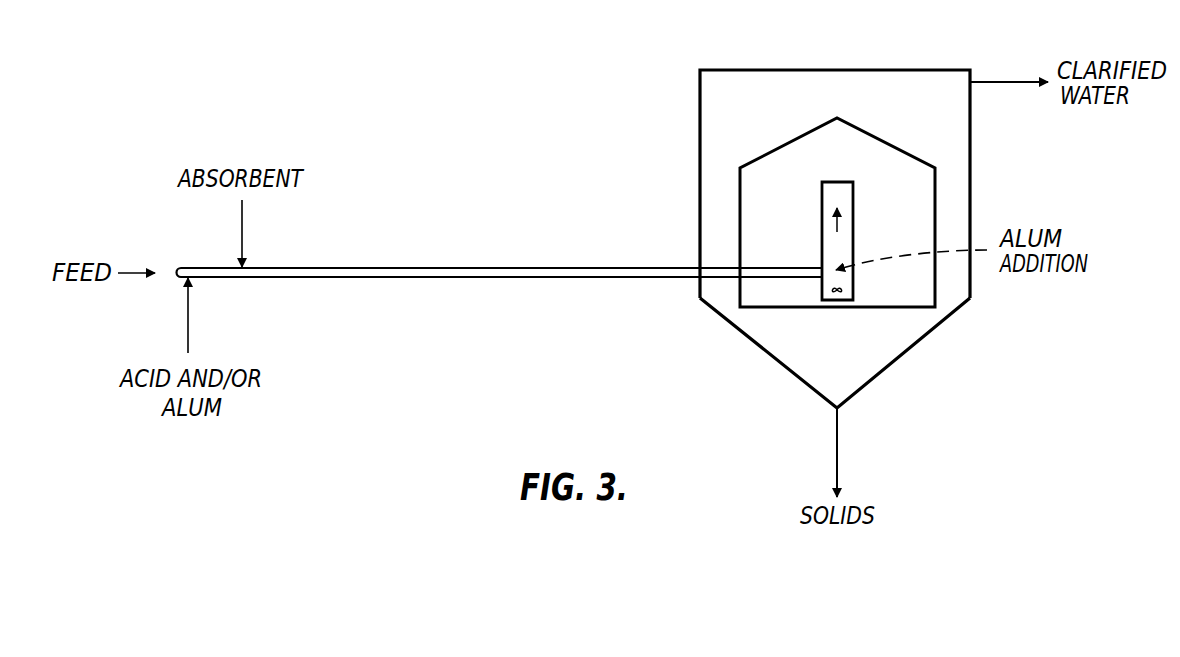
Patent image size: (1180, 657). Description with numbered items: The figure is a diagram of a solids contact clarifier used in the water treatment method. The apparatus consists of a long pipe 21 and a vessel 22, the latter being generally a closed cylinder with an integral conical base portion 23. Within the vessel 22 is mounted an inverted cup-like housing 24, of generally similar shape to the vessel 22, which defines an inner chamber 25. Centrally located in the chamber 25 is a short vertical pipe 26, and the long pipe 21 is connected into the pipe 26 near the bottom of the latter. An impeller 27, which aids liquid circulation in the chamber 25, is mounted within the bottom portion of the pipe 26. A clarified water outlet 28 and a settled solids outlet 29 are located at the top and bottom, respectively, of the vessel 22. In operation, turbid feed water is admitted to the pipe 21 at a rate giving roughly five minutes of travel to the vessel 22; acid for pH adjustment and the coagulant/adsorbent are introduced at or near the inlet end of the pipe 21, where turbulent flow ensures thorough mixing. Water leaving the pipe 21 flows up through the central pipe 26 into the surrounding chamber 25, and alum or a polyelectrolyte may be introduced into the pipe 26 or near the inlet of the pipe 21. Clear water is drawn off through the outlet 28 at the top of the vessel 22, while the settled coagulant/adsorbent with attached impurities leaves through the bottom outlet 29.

The long pipe 21 is at (527, 268).
The vessel 22 is at (700, 127).
The conical base portion 23 is at (914, 345).
The inverted cup-like housing 24 is at (806, 133).
The inner chamber 25 is at (792, 204).
The short vertical pipe 26 is at (856, 221).
The impeller 27 is at (836, 297).
The clarified water outlet 28 is at (1018, 81).
The settled solids outlet 29 is at (838, 437).